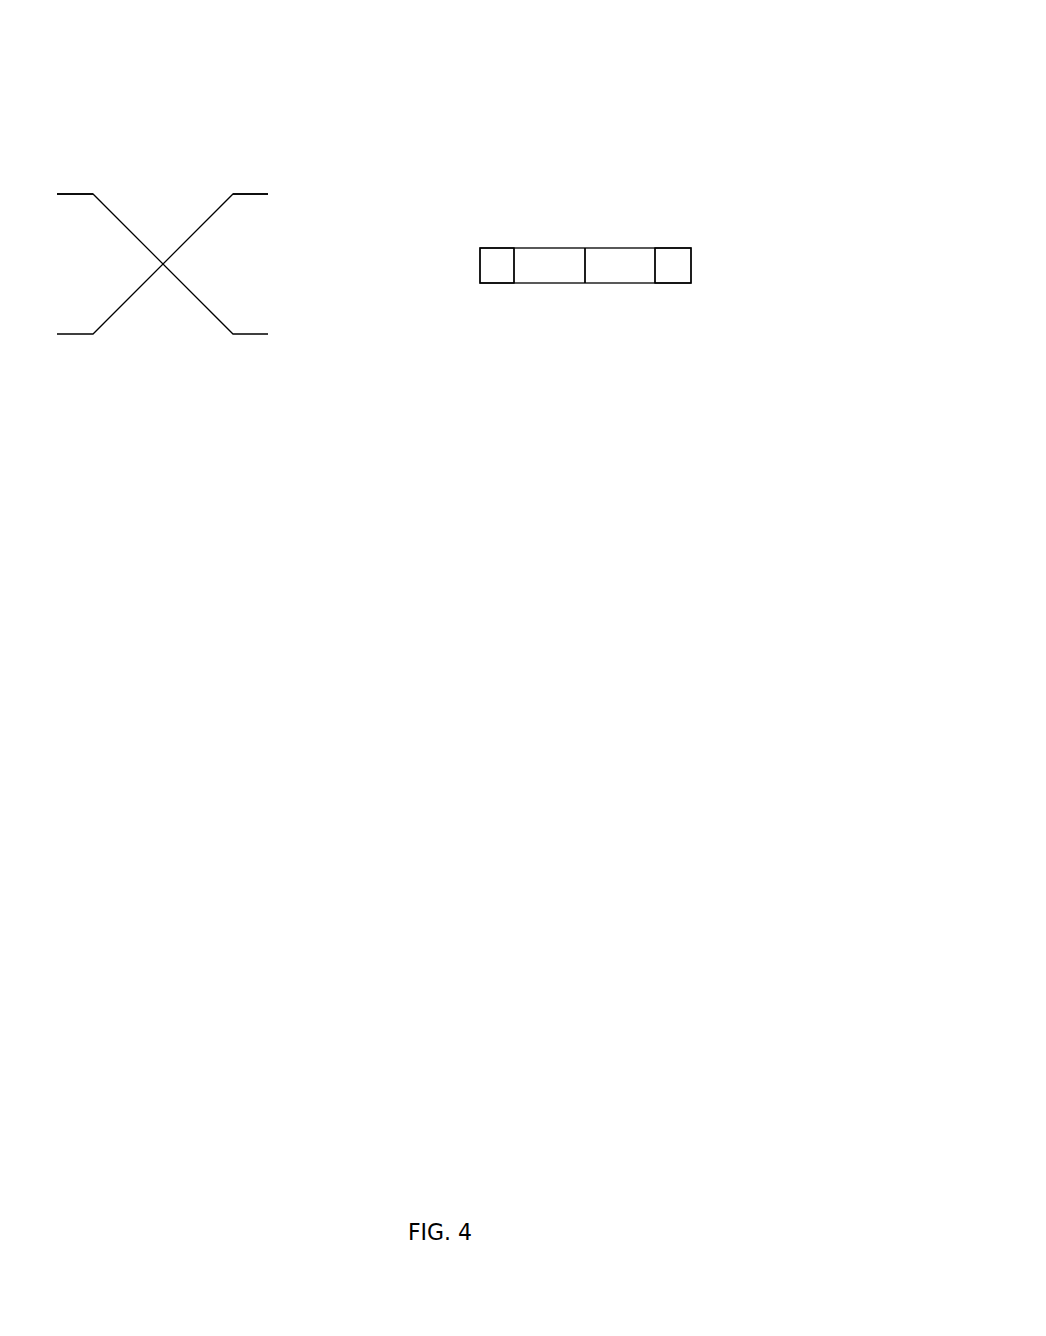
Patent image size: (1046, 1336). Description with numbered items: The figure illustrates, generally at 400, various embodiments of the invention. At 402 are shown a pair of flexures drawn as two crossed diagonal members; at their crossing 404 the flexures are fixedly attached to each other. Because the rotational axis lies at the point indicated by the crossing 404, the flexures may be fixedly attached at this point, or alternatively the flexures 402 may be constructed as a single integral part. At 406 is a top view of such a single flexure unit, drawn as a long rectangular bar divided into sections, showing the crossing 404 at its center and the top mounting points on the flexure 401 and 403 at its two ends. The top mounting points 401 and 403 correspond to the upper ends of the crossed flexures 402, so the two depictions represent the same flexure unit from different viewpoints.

The embodiments of the present invention 400 is at (766, 54).
The top mounting point 401 is at (80, 195).
The flexures 402 is at (162, 306).
The top mounting point 403 is at (250, 195).
The crossing 404 is at (165, 265).
The top view of single flexure unit 406 is at (585, 333).